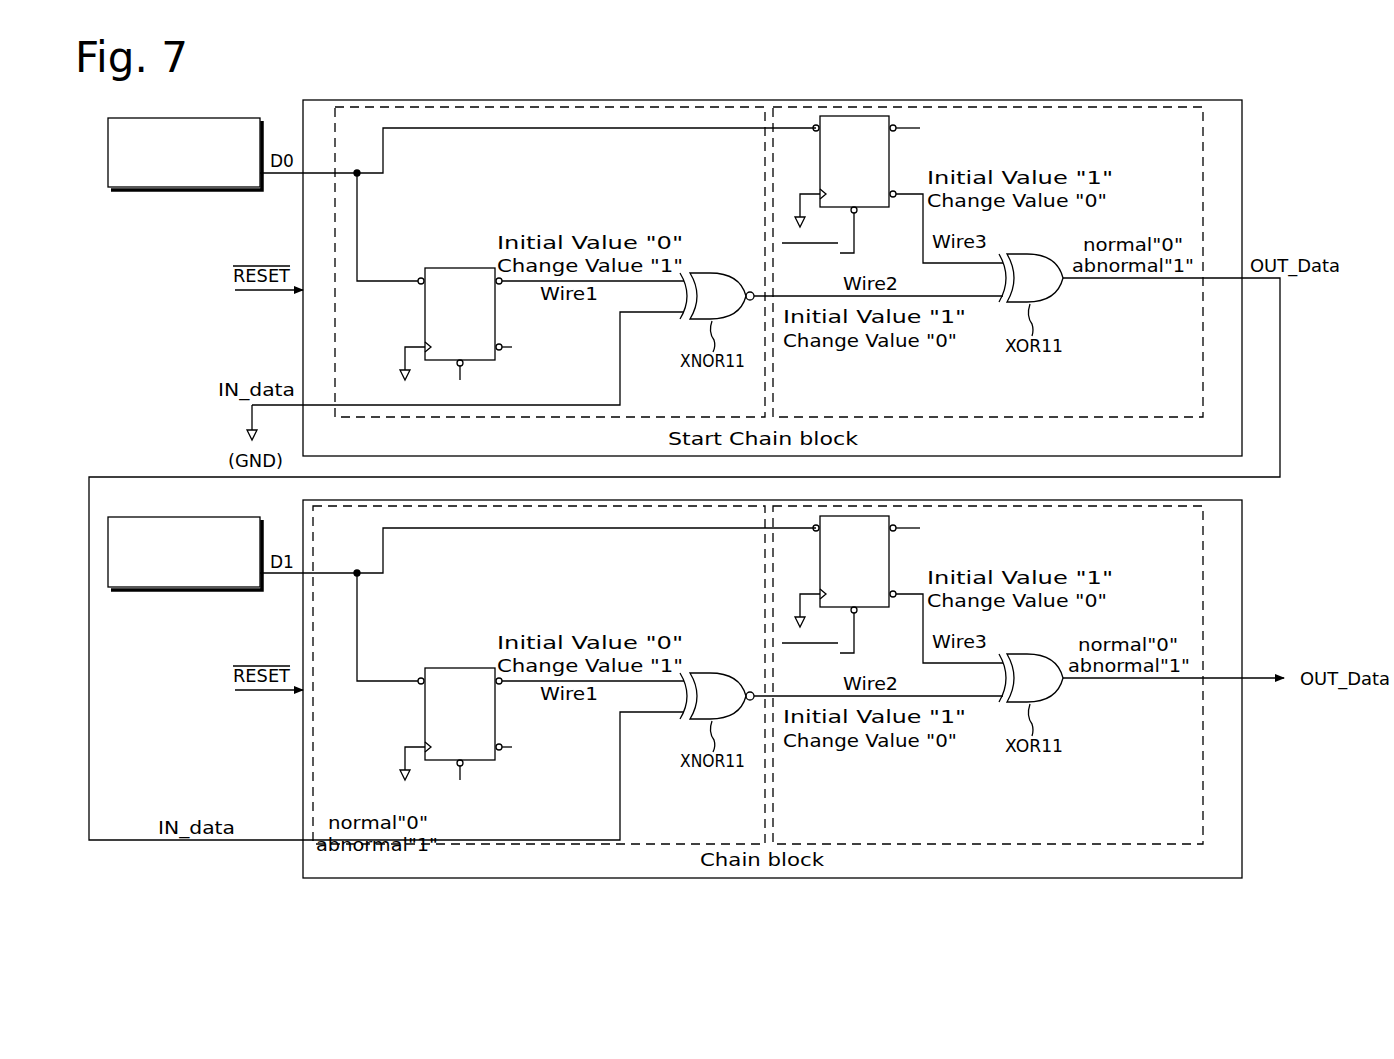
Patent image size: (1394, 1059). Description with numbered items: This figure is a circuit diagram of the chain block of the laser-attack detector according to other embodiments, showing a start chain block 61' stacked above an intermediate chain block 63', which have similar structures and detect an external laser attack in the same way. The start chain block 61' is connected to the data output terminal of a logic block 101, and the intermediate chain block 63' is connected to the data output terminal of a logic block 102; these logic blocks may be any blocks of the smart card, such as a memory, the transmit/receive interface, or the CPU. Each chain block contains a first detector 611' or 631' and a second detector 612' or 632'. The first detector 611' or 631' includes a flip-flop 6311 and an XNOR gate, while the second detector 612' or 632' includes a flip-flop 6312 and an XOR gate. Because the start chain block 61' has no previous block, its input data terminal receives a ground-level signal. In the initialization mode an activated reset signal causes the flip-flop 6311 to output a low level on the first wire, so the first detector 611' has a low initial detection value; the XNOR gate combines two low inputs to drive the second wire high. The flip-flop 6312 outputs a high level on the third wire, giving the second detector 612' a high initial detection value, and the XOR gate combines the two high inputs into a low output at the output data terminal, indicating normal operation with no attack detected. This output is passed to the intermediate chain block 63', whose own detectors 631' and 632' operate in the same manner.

The logic block 101 is at (225, 118).
The logic block 102 is at (215, 590).
The start chain block 61' is at (782, 254).
The first detector 611' is at (550, 241).
The second detector 612' is at (988, 240).
The intermediate chain block 63' is at (818, 689).
The first detector 631' is at (491, 675).
The second detector 632' is at (1045, 675).
The flip-flop 6311 is at (452, 268).
The flip-flop 6312 is at (868, 116).